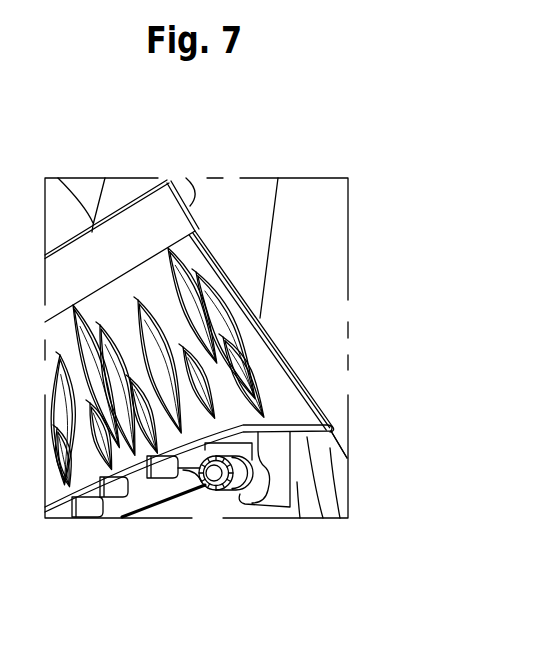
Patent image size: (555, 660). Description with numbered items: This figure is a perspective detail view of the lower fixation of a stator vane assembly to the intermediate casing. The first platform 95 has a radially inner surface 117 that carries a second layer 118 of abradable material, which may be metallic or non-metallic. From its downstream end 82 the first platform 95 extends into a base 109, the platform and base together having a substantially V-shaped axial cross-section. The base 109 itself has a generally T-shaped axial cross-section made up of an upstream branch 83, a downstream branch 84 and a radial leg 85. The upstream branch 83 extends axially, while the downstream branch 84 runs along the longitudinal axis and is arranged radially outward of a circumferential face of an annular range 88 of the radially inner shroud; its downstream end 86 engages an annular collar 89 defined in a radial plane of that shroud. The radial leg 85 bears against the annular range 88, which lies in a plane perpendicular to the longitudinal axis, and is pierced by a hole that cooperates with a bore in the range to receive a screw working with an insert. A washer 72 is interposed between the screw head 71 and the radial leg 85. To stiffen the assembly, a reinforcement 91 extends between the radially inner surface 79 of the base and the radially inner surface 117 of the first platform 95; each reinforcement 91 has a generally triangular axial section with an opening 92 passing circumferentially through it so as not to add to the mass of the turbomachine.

The second layer of abradable material 118 is at (205, 233).
The radially inner surface of the first platform 117 is at (210, 250).
The first platform 95 is at (287, 338).
The radially inner surface of the base 79 is at (283, 413).
The downstream end of the first platform 82 is at (323, 411).
The annular collar 89 is at (338, 431).
The downstream end of the downstream branch 86 is at (339, 444).
The base 109 is at (313, 461).
The reinforcement 91 is at (125, 450).
The opening 92 is at (163, 467).
The annular range 88 is at (171, 499).
The screw head 71 is at (212, 489).
The washer 72 is at (243, 492).
The radial leg 85 is at (183, 470).
The upstream branch 83 is at (281, 442).
The downstream branch 84 is at (323, 518).